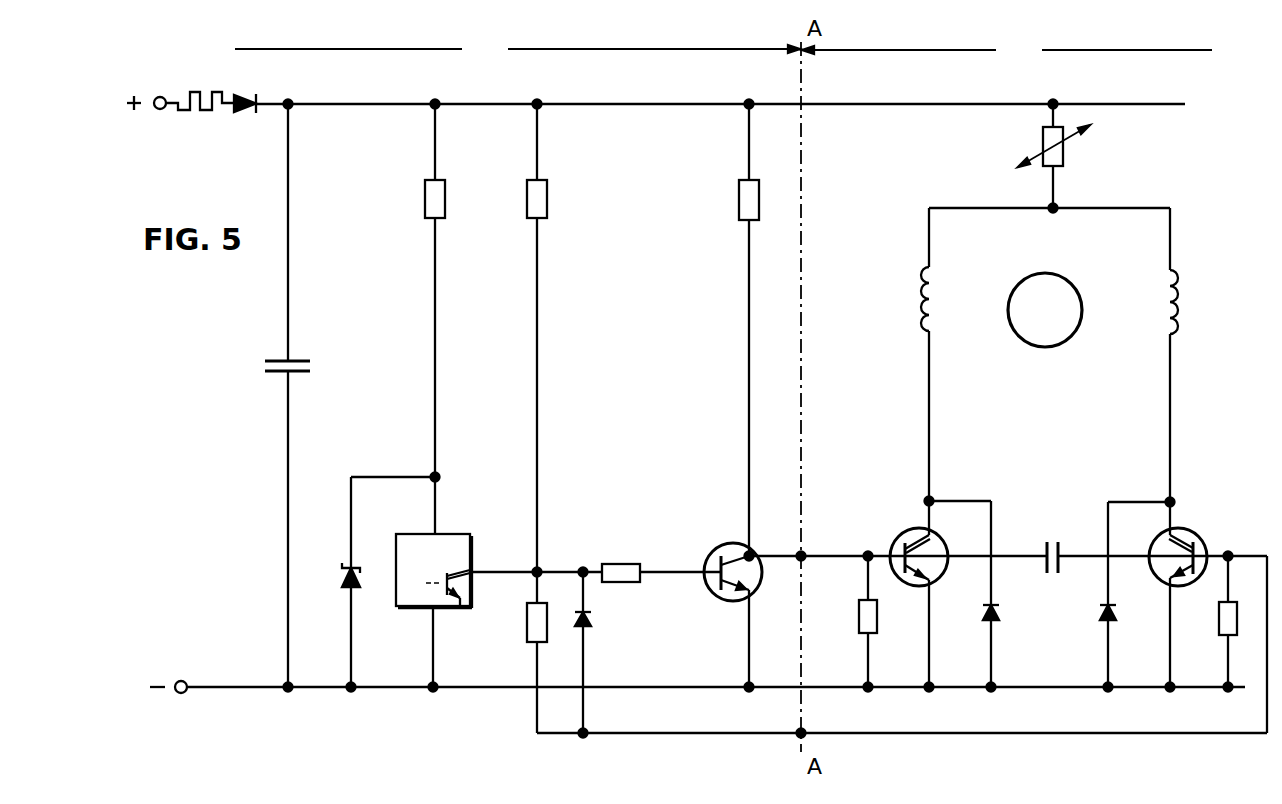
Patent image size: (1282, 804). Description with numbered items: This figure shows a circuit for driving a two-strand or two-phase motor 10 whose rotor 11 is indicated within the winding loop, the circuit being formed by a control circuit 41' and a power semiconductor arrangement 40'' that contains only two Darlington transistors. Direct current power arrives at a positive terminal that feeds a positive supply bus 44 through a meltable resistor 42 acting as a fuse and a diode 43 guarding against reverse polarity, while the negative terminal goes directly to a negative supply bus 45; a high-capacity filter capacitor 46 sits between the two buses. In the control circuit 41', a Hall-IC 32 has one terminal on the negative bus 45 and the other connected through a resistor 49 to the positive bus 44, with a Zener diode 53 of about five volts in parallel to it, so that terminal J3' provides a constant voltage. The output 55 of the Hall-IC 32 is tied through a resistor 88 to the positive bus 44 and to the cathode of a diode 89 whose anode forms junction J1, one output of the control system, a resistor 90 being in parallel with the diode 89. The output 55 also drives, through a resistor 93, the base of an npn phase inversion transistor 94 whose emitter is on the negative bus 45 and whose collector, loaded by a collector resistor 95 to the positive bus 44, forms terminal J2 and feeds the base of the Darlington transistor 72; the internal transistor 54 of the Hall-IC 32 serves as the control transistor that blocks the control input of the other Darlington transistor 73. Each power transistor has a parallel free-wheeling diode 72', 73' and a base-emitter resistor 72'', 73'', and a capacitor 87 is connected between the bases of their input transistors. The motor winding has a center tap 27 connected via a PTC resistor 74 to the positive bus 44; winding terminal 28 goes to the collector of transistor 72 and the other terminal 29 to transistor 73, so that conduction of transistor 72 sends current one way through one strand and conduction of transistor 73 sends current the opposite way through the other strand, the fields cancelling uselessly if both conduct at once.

The meltable resistor 42 is at (201, 92).
The diode 43 is at (250, 93).
The positive supply bus 44 is at (600, 104).
The negative supply bus 45 is at (255, 684).
The filter capacitor 46 is at (265, 365).
The control circuit 41' is at (517, 50).
The power semiconductor arrangement 40'' is at (1007, 52).
The resistor 49 is at (425, 200).
The resistor 88 is at (547, 200).
The collector resistor 95 is at (739, 201).
The PTC resistor 74 is at (1043, 134).
The center tap 27 is at (1054, 210).
The motor 10 is at (988, 341).
The permanent magnet rotor 11 is at (1075, 313).
The terminal J3' is at (418, 464).
The Hall-IC 32 is at (425, 535).
The internal transistor 54 is at (465, 573).
The output 55 is at (514, 574).
The Zener diode 53 is at (344, 584).
The resistor 93 is at (620, 563).
The npn transistor 94 is at (732, 546).
The terminal J2 is at (802, 555).
The resistor 90 is at (528, 628).
The diode 89 is at (592, 618).
The junction J1 is at (802, 732).
The winding terminal 28 is at (927, 500).
The winding terminal 29 is at (1172, 501).
The Darlington transistor 72 is at (934, 594).
The free-wheeling diode 72' is at (1015, 594).
The base-emitter resistor 72'' is at (897, 621).
The capacitor 87 is at (1057, 540).
The Darlington transistor 73 is at (1192, 594).
The free-wheeling diode 73' is at (1134, 594).
The base-emitter resistor 73'' is at (1207, 621).